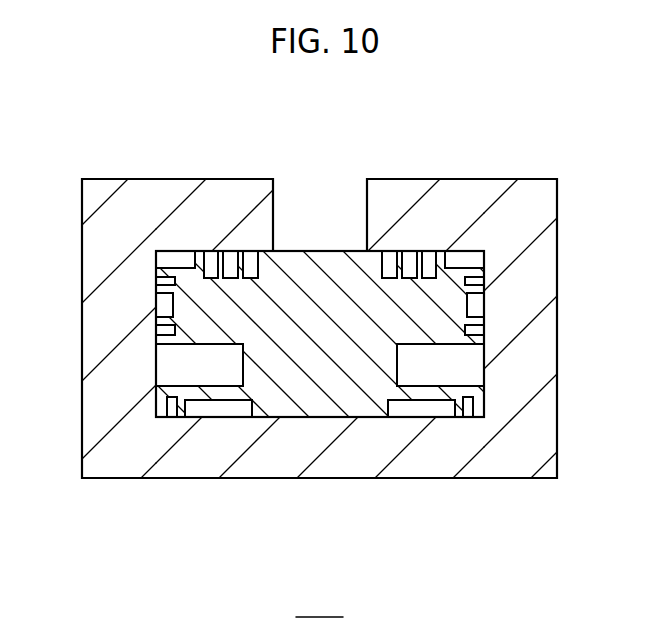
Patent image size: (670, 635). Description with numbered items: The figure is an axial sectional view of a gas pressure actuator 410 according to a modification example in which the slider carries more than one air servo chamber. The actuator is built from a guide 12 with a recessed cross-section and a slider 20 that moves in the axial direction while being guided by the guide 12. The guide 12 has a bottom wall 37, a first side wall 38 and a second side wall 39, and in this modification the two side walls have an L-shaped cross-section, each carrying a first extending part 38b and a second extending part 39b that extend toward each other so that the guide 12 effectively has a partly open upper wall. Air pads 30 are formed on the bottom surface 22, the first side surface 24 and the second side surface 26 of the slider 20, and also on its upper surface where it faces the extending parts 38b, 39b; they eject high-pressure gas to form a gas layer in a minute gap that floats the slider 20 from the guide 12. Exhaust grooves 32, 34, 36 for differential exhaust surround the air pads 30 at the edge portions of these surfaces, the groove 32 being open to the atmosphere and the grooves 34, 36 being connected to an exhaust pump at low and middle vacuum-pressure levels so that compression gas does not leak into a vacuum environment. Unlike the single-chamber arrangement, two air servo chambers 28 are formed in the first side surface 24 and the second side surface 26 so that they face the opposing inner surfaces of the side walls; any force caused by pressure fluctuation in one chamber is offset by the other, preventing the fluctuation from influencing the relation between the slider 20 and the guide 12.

The guide 12 is at (492, 480).
The slider 20 is at (300, 262).
The bottom surface 22 is at (270, 420).
The first side surface 24 is at (482, 408).
The second side surface 26 is at (160, 408).
The air servo chamber 28 is at (158, 384).
The air pad 30 is at (160, 258).
The exhaust groove 32 is at (209, 262).
The exhaust groove 34 is at (230, 262).
The exhaust groove 36 is at (250, 262).
The bottom wall 37 is at (298, 480).
The first side wall 38 is at (545, 356).
The first extending part 38b is at (387, 182).
The second side wall 39 is at (93, 356).
The second extending part 39b is at (260, 178).
The gas pressure actuator 410 is at (319, 601).